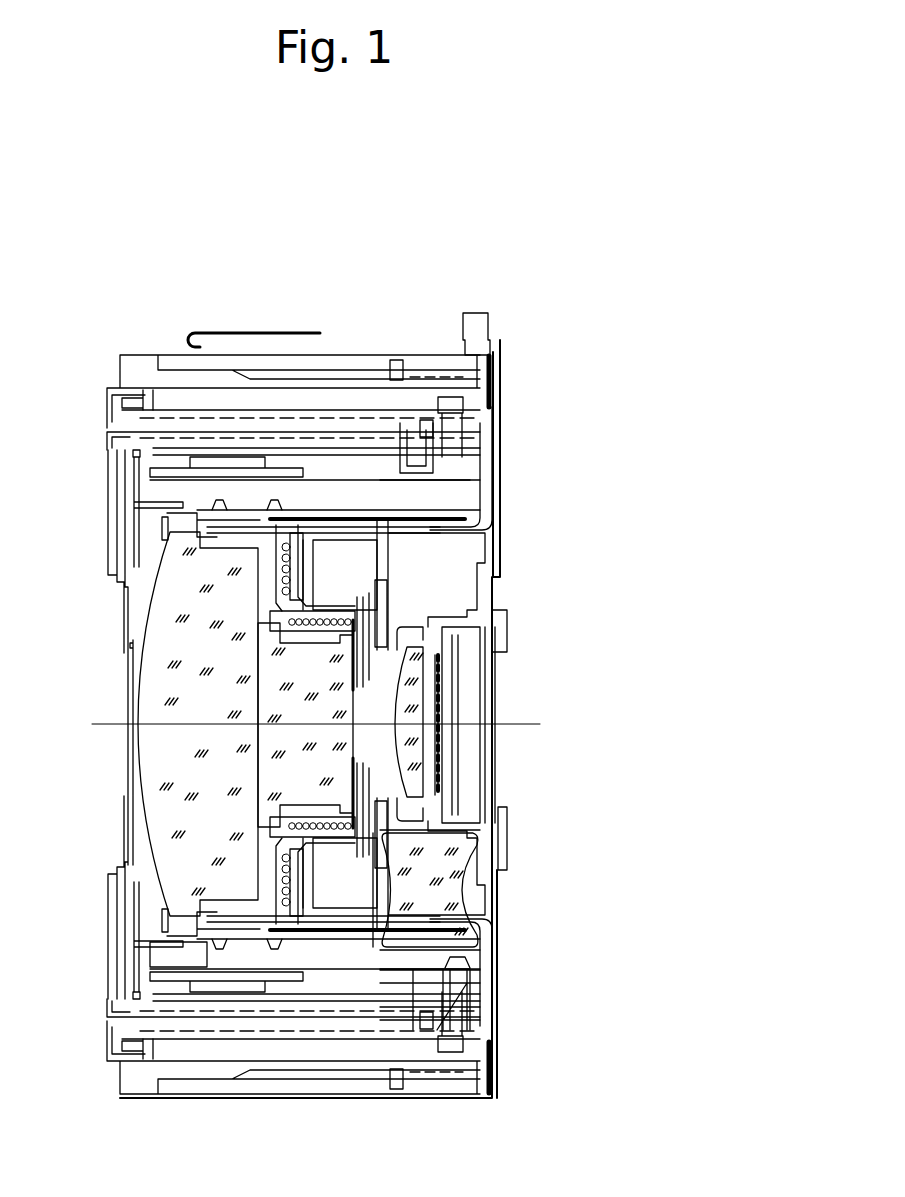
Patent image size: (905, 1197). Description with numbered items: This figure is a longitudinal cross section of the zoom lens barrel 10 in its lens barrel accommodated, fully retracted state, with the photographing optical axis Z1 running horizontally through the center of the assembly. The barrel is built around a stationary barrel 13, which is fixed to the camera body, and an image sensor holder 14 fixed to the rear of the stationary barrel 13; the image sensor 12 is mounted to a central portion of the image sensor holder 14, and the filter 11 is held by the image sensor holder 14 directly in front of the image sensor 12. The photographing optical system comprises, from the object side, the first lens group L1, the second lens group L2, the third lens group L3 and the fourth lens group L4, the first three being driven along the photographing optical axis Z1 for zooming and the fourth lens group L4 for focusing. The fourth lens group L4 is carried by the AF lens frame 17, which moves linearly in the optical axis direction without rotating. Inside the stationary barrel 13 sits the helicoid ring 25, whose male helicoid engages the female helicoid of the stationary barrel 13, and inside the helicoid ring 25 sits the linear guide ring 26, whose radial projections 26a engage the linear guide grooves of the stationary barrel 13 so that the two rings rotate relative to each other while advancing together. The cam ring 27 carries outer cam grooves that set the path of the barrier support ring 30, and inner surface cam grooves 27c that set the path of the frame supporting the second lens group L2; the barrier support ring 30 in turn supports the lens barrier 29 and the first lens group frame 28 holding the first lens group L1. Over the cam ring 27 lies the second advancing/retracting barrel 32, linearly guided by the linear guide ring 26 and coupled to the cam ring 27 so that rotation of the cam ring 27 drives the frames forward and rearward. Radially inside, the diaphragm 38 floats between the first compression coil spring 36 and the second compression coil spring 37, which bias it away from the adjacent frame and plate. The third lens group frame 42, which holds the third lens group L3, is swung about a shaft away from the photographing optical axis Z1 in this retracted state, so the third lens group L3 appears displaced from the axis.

The zoom lens barrel 10 is at (470, 272).
The filter 11 is at (440, 700).
The image sensor 12 is at (480, 657).
The stationary barrel 13 is at (427, 360).
The image sensor holder 14 is at (493, 543).
The AF lens frame 17 is at (478, 833).
The helicoid ring 25 is at (318, 393).
The linear guide ring 26 is at (383, 413).
The radial projection 26a is at (487, 340).
The cam ring 27 is at (457, 493).
The inner surface cam groove 27c is at (230, 508).
The first lens group frame 28 is at (210, 472).
The lens barrier 29 is at (113, 553).
The barrier support ring 30 is at (232, 455).
The second advancing/retracting barrel 32 is at (180, 435).
The first compression coil spring 36 is at (312, 630).
The second compression coil spring 37 is at (282, 590).
The diaphragm 38 is at (358, 767).
The third lens group frame 42 is at (475, 950).
The first lens group L1 is at (172, 601).
The second lens group L2 is at (265, 690).
The third lens group L3 is at (455, 915).
The fourth lens group L4 is at (412, 785).
The photographing optical axis Z1 is at (510, 726).